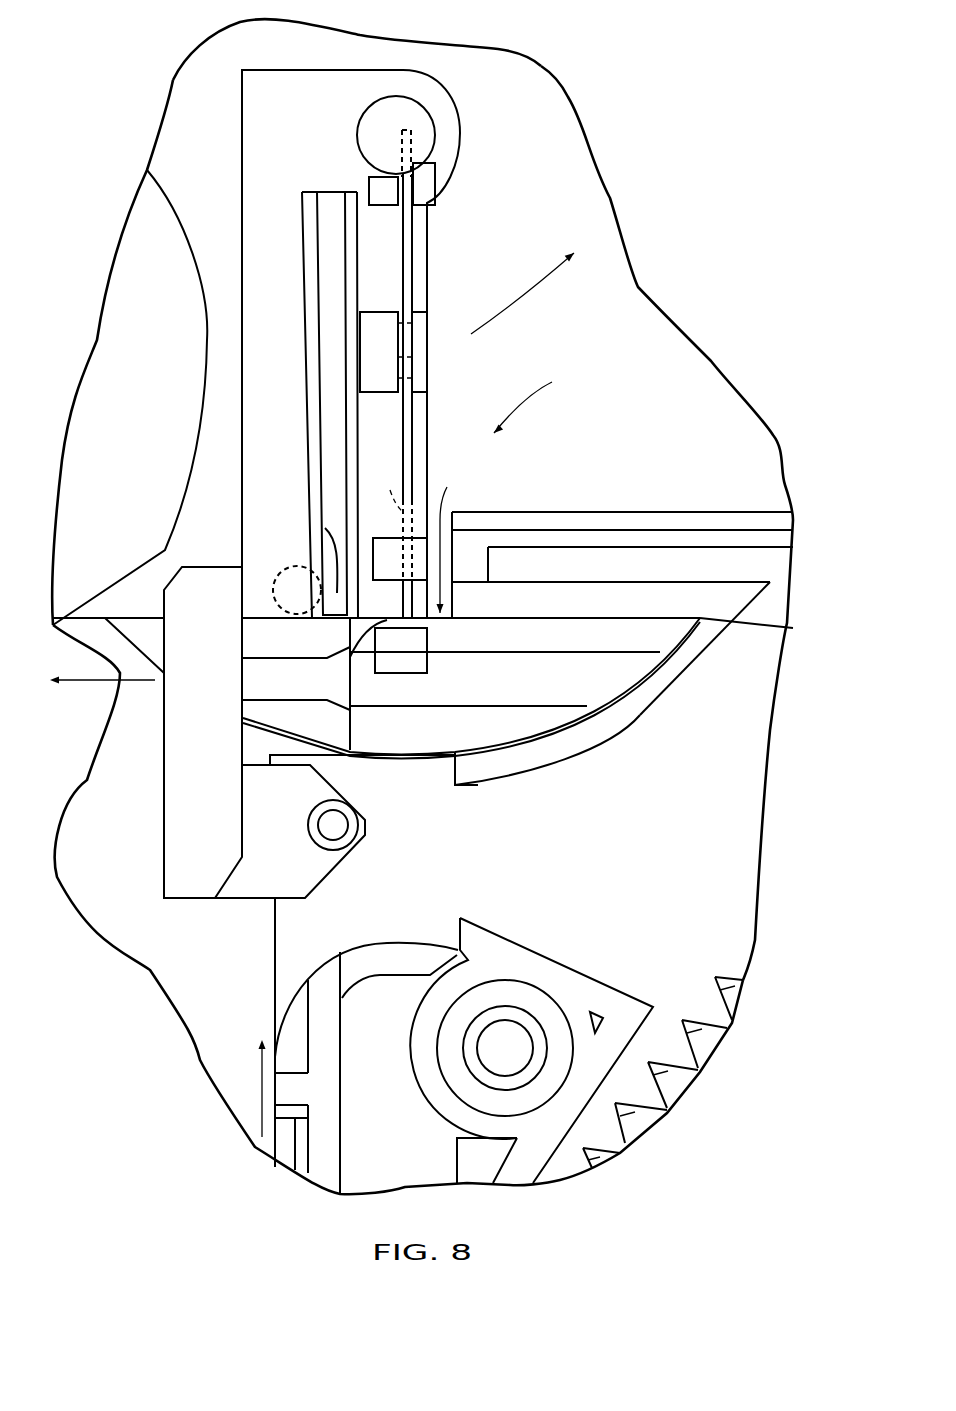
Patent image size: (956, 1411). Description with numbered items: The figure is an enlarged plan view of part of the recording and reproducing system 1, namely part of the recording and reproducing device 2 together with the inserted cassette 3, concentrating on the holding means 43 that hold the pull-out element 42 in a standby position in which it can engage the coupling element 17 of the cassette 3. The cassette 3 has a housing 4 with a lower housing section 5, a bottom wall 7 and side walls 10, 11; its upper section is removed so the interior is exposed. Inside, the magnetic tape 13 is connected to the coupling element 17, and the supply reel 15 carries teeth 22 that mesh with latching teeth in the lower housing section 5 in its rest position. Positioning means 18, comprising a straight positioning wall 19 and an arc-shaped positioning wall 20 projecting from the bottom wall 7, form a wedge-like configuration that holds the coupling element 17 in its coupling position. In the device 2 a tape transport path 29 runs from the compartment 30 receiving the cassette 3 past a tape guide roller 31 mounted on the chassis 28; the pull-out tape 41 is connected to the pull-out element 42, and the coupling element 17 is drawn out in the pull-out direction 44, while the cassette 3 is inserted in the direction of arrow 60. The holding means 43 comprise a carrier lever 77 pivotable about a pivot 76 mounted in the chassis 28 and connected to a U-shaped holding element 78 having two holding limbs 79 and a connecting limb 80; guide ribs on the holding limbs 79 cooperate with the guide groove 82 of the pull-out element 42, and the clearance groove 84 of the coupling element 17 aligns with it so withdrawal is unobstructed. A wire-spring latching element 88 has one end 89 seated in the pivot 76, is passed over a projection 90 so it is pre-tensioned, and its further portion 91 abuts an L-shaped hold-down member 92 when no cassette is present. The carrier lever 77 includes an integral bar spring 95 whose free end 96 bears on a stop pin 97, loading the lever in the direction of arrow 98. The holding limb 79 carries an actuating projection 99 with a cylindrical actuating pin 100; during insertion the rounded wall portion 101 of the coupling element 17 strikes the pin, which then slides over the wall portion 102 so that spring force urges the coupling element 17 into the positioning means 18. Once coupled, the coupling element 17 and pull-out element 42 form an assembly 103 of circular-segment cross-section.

The recording and reproducing system 1 is at (190, 1075).
The recording and reproducing device 2 is at (618, 189).
The cassette 3 is at (618, 481).
The housing 4 is at (713, 506).
The lower housing section 5 is at (275, 1000).
The bottom wall 7 is at (287, 965).
The side wall 10 is at (539, 516).
The side wall 11 is at (287, 1163).
The magnetic tape 13 is at (745, 633).
The supply reel 15 is at (733, 975).
The coupling element 17 is at (463, 485).
The positioning means 18 is at (703, 672).
The positioning wall 19 is at (595, 595).
The positioning wall 20 is at (642, 705).
The teeth 22 is at (705, 1028).
The chassis 28 is at (545, 68).
The tape transport path 29 is at (85, 615).
The compartment 30 is at (262, 924).
The tape guide roller 31 is at (157, 207).
The pull-out tape 41 is at (73, 622).
The pull-out element 42 is at (262, 615).
The holding means 43 is at (576, 385).
The arrow indicating pull-out direction 44 is at (105, 683).
The arrow indicating direction of cassette insertion 60 is at (258, 1080).
The pivot 76 is at (420, 118).
The carrier lever 77 is at (248, 317).
The U-shaped holding element 78 is at (177, 567).
The holding limb 79 is at (177, 838).
The connecting limb 80 is at (222, 565).
The guide groove 82 is at (268, 693).
The clearance groove 84 is at (510, 692).
The latching element 88 is at (415, 288).
The end of wire spring 89 is at (400, 143).
The projection 90 is at (427, 357).
The further portion of wire spring 91 is at (389, 488).
The L-shaped hold-down member 92 is at (397, 573).
The bar spring 95 is at (333, 390).
The free end of bar spring 96 is at (318, 528).
The stop pin 97 is at (318, 577).
The arrow indicating spring-loading direction 98 is at (552, 291).
The actuating projection 99 is at (308, 878).
The actuating pin 100 is at (350, 838).
The rounded wall portion 101 is at (365, 633).
The wall portion 102 is at (350, 732).
The assembly 103 is at (348, 758).